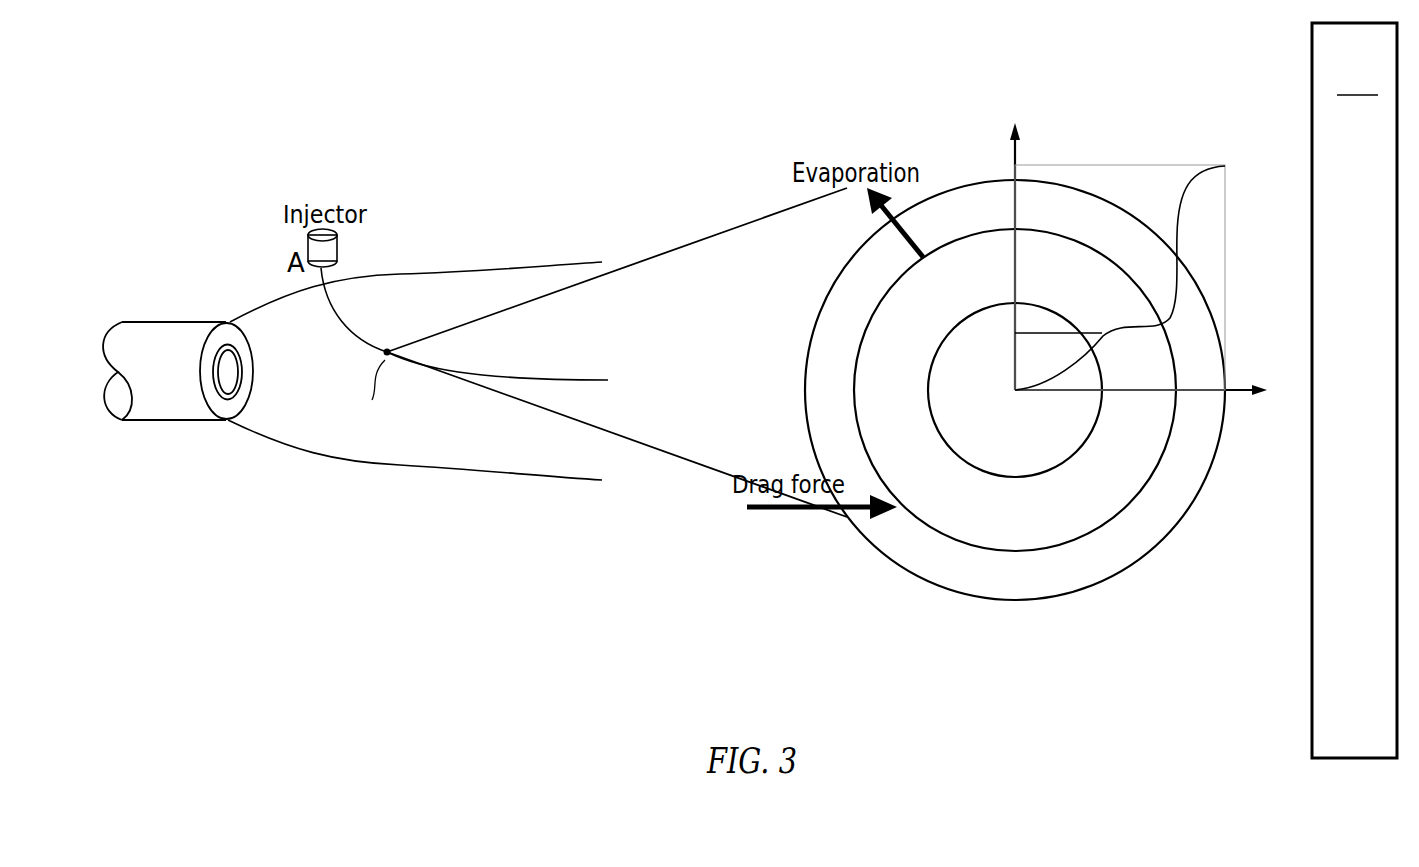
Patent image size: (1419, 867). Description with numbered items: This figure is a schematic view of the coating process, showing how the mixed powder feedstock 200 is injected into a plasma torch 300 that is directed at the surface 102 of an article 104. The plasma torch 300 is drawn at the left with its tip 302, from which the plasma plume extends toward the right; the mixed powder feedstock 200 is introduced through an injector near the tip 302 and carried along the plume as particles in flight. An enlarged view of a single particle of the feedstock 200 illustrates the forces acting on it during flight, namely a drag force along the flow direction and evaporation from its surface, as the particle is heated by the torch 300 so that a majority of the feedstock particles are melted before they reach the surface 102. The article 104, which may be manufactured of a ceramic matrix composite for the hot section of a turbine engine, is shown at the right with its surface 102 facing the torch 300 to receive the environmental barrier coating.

The plasma torch 300 is at (171, 318).
The tip 302 is at (250, 327).
The mixed powder feedstock 200 is at (381, 340).
The surface 102 is at (1312, 68).
The article 104 is at (1357, 80).